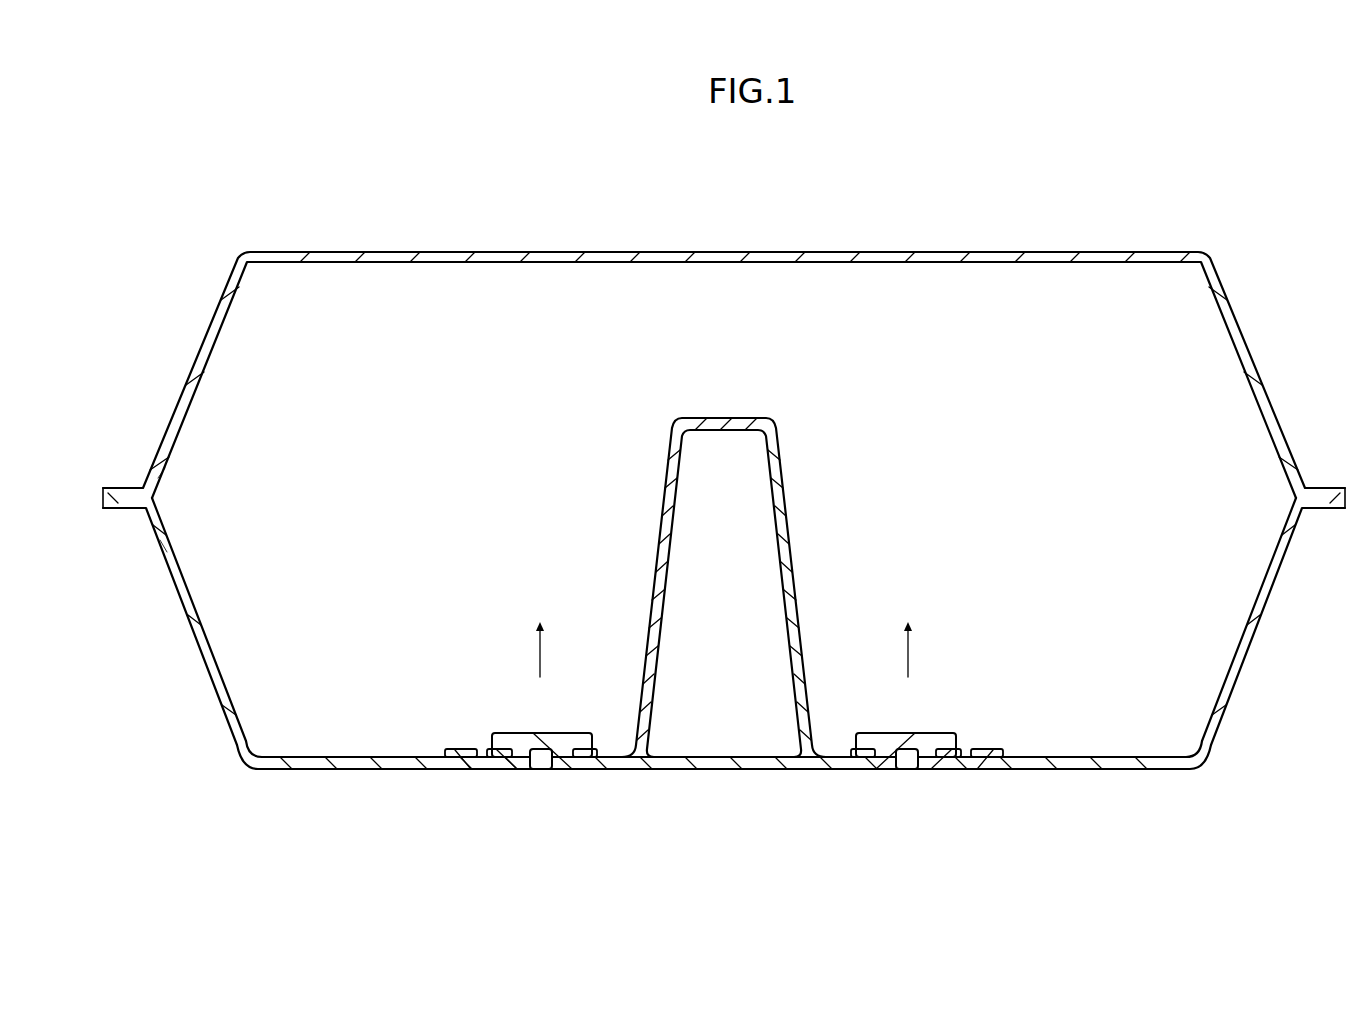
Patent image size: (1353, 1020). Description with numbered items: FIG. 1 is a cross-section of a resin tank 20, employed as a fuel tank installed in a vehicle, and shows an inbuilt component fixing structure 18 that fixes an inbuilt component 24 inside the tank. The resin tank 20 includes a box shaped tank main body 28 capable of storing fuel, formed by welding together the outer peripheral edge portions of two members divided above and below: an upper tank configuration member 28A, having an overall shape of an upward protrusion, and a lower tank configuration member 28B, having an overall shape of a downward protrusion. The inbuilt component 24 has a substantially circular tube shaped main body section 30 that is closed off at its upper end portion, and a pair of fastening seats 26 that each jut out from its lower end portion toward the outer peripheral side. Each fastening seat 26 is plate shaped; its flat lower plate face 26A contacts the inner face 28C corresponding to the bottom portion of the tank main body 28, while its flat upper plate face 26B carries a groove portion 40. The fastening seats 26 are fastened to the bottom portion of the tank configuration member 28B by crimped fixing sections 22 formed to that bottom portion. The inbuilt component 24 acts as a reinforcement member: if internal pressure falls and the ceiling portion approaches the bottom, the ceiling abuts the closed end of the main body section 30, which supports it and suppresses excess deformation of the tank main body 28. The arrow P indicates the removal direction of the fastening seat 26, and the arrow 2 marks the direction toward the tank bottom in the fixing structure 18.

The resin tank 20 is at (247, 238).
The tank main body 28 is at (162, 395).
The tank configuration member 28A is at (155, 470).
The tank configuration member 28B is at (162, 550).
The inner face 28C is at (1078, 757).
The inbuilt component 24 is at (741, 564).
The main body section 30 is at (788, 524).
The crimped fixing section 22 is at (553, 728).
The fastening seat 26 is at (726, 708).
The plate face 26A is at (460, 770).
The plate face 26B is at (468, 750).
The groove portion 40 is at (601, 746).
The inbuilt component fixing structure 18 is at (481, 648).
The direction of insertion 2 is at (515, 682).
The arrow P is at (542, 655).